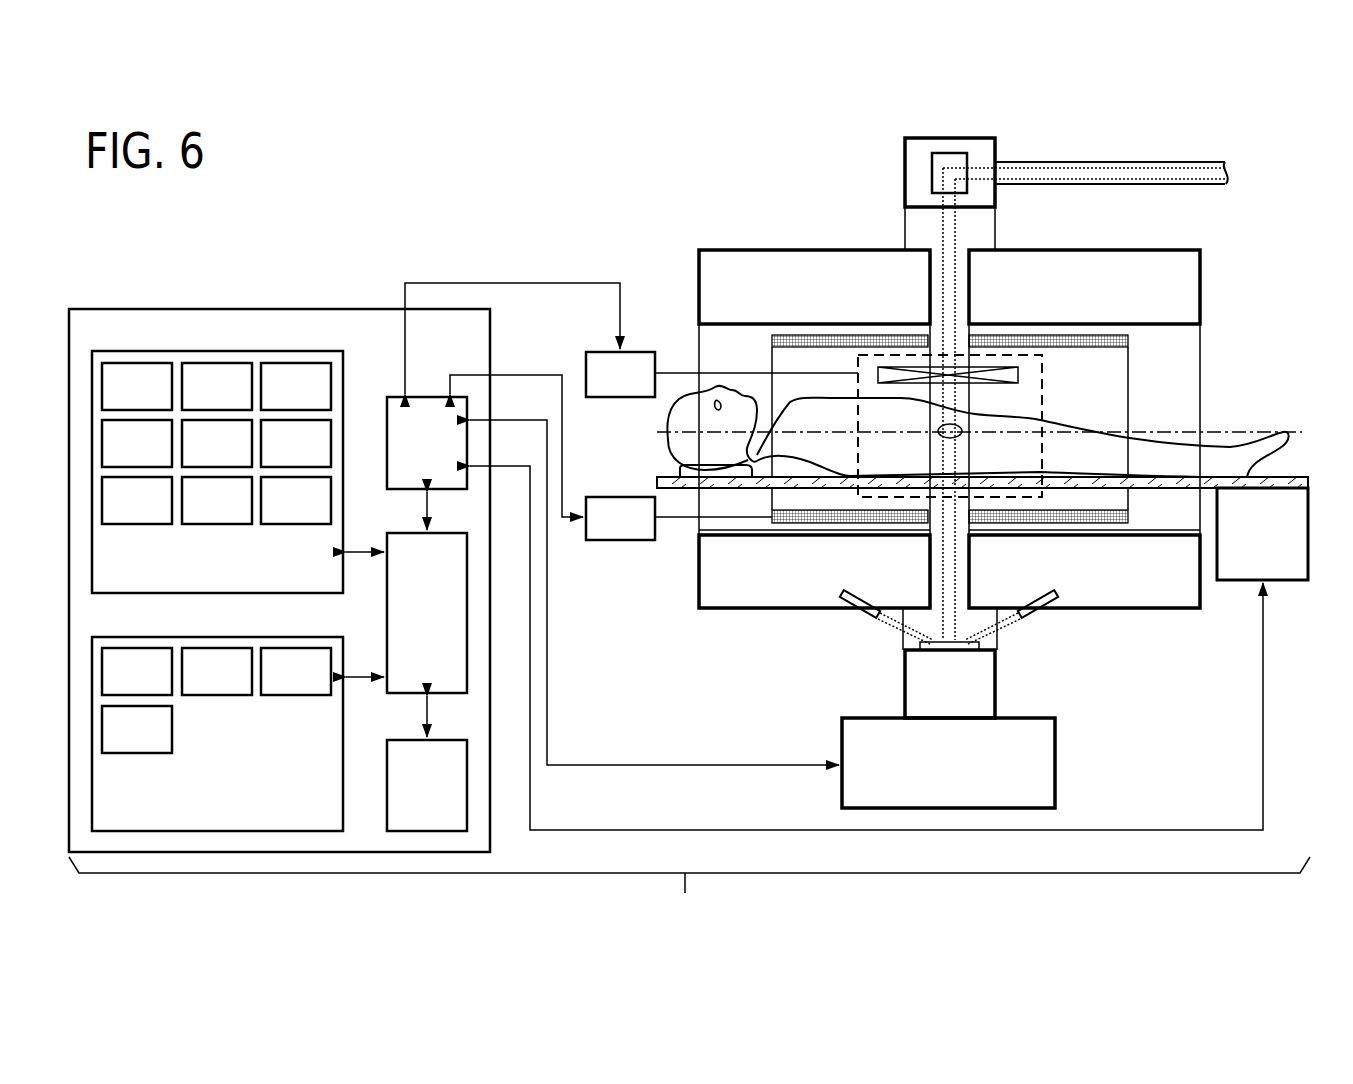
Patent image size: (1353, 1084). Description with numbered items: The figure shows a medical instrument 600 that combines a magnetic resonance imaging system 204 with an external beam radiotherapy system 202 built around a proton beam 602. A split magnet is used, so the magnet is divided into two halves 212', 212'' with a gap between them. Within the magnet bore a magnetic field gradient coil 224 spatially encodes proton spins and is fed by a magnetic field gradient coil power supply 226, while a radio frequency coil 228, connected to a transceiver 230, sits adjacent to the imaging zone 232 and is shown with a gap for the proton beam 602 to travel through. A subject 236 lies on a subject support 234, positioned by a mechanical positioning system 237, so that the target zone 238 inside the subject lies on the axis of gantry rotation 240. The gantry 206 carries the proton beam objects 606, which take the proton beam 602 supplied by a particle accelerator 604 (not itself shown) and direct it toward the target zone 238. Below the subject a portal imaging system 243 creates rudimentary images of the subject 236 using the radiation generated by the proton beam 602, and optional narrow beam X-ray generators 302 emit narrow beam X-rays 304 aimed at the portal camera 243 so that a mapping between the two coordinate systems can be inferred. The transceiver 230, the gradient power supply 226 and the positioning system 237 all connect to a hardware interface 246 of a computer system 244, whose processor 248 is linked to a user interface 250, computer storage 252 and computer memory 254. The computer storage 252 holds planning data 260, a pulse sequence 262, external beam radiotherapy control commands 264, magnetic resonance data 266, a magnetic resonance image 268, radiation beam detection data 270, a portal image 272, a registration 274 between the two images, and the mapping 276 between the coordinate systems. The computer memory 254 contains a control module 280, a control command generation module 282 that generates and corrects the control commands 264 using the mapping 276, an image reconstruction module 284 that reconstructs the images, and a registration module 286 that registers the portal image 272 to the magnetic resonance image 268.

The medical instrument 600 is at (689, 892).
The magnetic resonance imaging system 204 is at (520, 232).
The computer system 244 is at (278, 309).
The computer storage 252 is at (190, 351).
The computer memory 254 is at (190, 637).
The hardware interface 246 is at (448, 458).
The processor 248 is at (448, 630).
The user interface 250 is at (448, 803).
The planning data 260 is at (158, 401).
The pulse sequence 262 is at (238, 401).
The external beam radiotherapy control commands 264 is at (317, 401).
The magnetic resonance data 266 is at (158, 458).
The magnetic resonance image 268 is at (238, 458).
The radiation beam detection data 270 is at (317, 458).
The portal image 272 is at (158, 515).
The registration 274 is at (238, 515).
The mapping 276 is at (317, 515).
The control module 280 is at (158, 686).
The control command generation module 282 is at (238, 686).
The image reconstruction module 284 is at (317, 686).
The registration module 286 is at (158, 744).
The transceiver 230 is at (641, 391).
The magnetic field gradient coil power supply 226 is at (641, 534).
The magnet half 212'' is at (764, 424).
The magnet half 212' is at (1135, 425).
The magnetic field gradient coil 224 is at (772, 340).
The external beam radiotherapy system 202 is at (884, 180).
The gantry 206 is at (996, 237).
The proton beam 602 is at (938, 262).
The proton beam objects 606 is at (932, 165).
The particle accelerator 604 is at (1237, 172).
The radio frequency coil 228 is at (1020, 375).
The imaging zone 232 is at (1045, 402).
The axis of gantry rotation 240 is at (1238, 432).
The target zone 238 is at (940, 434).
The subject support 234 is at (680, 478).
The subject 236 is at (667, 412).
The mechanical positioning system 237 is at (1280, 570).
The narrow beam X-ray generators 302 is at (858, 612).
The narrow beam X-ray 304 is at (915, 630).
The portal imaging system 243 is at (935, 650).